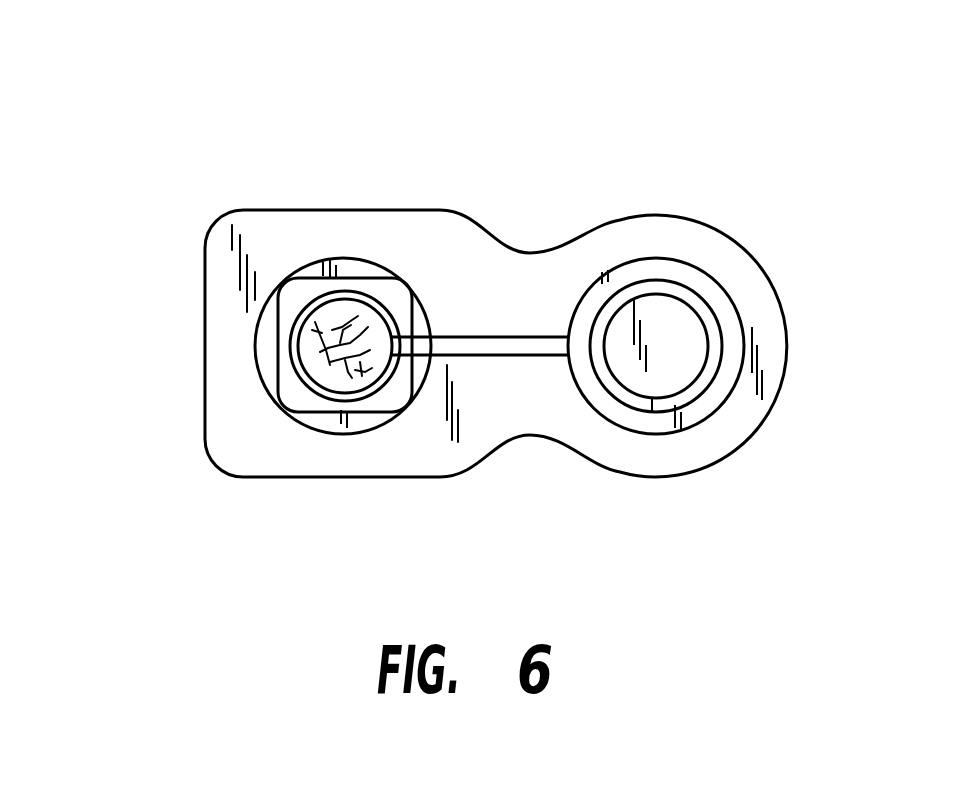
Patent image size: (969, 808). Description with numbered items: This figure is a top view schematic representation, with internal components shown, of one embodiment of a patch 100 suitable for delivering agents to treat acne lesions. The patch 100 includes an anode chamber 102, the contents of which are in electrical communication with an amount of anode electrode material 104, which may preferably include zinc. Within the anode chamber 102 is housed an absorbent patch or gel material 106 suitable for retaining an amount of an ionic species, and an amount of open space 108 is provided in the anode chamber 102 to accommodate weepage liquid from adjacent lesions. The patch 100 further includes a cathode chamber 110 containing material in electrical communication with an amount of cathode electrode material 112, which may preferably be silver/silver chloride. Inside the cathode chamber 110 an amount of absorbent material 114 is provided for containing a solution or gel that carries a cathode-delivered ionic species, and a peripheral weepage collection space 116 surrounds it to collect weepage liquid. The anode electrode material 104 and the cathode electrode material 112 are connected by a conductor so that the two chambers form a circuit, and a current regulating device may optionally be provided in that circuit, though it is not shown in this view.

The patch 100 is at (455, 137).
The anode chamber 102 is at (265, 352).
The anode electrode material 104 is at (297, 412).
The absorbent patch or gel material 106 is at (342, 370).
The open space 108 is at (293, 299).
The cathode chamber 110 is at (712, 273).
The cathode electrode material 112 is at (728, 317).
The absorbent material 114 is at (676, 368).
The peripheral weepage collection space 116 is at (675, 288).